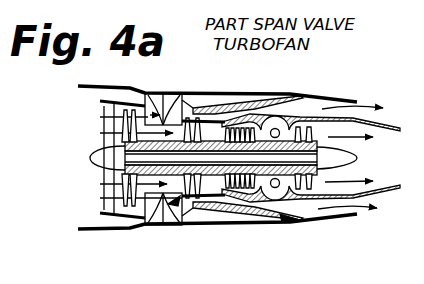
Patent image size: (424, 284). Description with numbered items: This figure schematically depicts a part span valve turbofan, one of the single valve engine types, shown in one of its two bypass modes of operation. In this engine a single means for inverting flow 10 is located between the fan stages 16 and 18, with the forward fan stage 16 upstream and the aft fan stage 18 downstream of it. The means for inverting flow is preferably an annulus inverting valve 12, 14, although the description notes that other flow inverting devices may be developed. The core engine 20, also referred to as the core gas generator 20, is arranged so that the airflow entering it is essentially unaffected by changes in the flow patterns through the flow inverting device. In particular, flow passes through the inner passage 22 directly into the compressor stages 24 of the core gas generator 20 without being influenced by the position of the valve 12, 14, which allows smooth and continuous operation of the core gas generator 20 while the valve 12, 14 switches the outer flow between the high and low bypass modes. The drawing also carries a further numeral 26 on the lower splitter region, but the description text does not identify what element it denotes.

The means for inverting flow 10 is at (176, 81).
The annulus inverting valve 12 is at (160, 91).
The annulus inverting valve 14 is at (200, 98).
The fan stage 16 is at (142, 208).
The fan stage 18 is at (210, 200).
The core engine 20 is at (272, 115).
The inner passage 22 is at (162, 206).
The compressor stages 24 is at (245, 194).
The splitter wall (lower) 26 is at (293, 218).